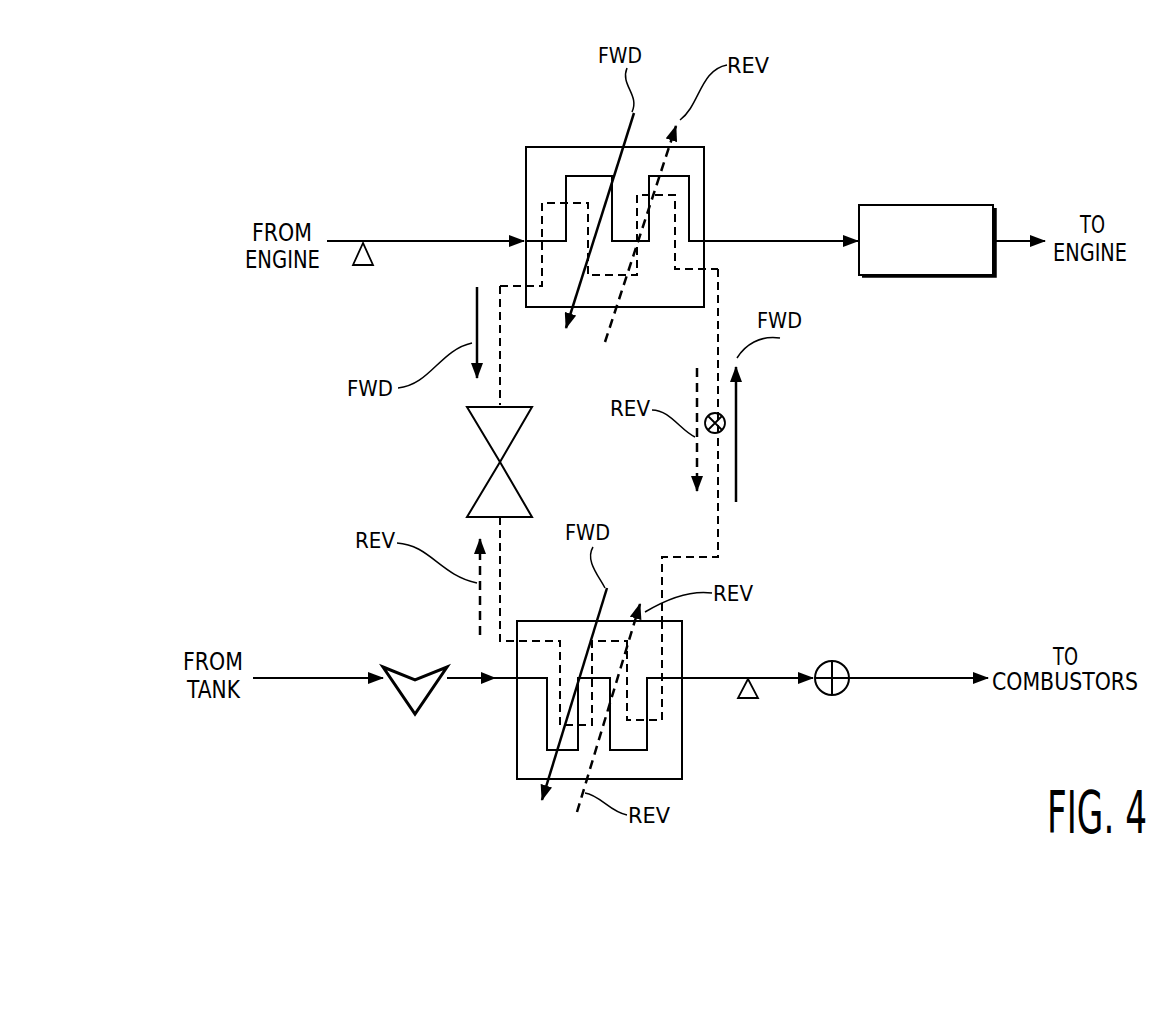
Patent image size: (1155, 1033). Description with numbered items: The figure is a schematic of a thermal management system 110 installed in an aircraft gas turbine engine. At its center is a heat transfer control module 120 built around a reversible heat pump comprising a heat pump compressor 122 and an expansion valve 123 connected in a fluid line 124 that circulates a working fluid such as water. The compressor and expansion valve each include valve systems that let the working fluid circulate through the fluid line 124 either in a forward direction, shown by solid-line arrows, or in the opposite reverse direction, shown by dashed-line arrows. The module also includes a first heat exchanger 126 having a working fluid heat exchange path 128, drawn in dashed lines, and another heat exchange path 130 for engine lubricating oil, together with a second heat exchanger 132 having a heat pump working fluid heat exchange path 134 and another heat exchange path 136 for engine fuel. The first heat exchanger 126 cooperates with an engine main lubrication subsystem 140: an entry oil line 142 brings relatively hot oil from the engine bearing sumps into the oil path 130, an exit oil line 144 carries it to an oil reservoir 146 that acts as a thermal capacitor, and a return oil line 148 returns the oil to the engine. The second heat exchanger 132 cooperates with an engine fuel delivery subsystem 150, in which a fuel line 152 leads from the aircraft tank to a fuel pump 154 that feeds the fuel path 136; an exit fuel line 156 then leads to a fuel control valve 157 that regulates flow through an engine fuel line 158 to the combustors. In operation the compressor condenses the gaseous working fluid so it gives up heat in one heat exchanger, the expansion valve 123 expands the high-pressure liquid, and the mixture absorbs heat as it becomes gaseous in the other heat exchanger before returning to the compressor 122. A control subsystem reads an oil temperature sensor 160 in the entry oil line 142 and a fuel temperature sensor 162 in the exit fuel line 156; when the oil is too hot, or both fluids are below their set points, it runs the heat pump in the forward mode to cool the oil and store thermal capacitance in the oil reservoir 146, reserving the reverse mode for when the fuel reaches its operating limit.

The thermal management system 110 is at (310, 131).
The heat transfer control module 120 is at (787, 380).
The heat pump compressor 122 is at (482, 430).
The expansion valve 123 is at (727, 423).
The fluid line 124 is at (717, 527).
The first heat exchanger 126 is at (548, 155).
The working fluid heat exchange path 128 is at (677, 252).
The heat exchange path 130 is at (563, 192).
The second heat exchanger 132 is at (675, 758).
The heat pump working fluid heat exchange path 134 is at (663, 648).
The heat exchange path 136 is at (548, 725).
The engine main lubrication subsystem 140 is at (427, 214).
The entry oil line 142 is at (432, 242).
The exit oil line 144 is at (800, 238).
The oil reservoir 146 is at (977, 275).
The return oil line 148 is at (1018, 237).
The engine fuel delivery subsystem 150 is at (366, 633).
The fuel line 152 is at (287, 680).
The fuel pump 154 is at (412, 698).
The exit fuel line 156 is at (792, 673).
The fuel control valve 157 is at (845, 689).
The engine fuel line 158 is at (910, 673).
The oil temperature sensor 160 is at (368, 265).
The fuel temperature sensor 162 is at (748, 698).